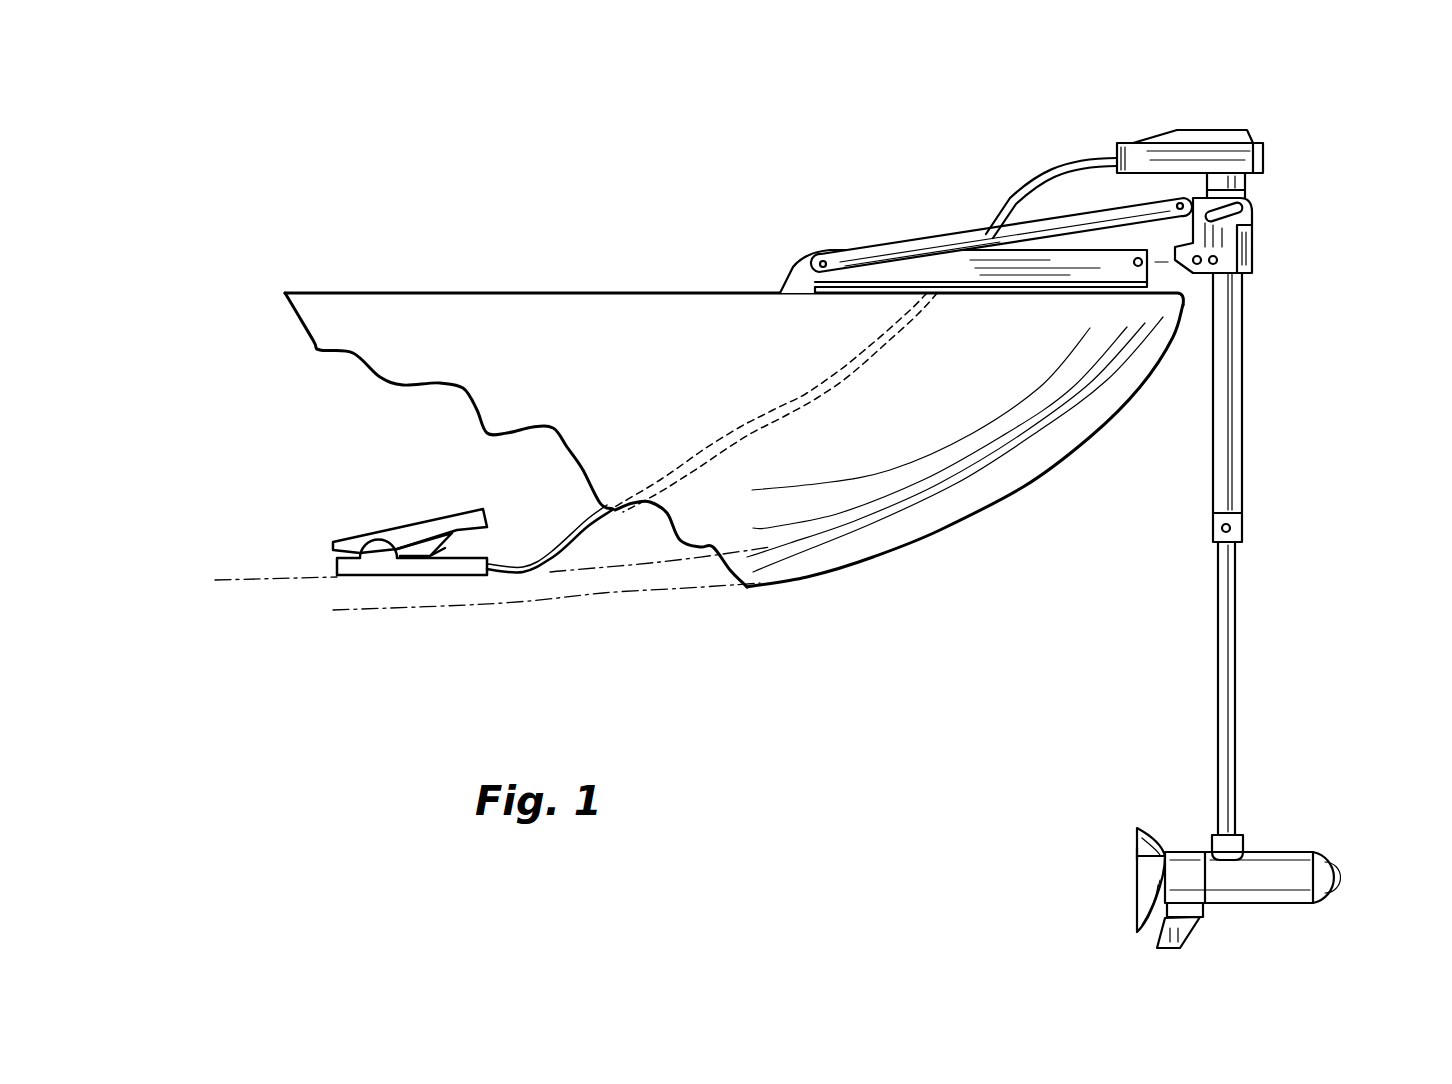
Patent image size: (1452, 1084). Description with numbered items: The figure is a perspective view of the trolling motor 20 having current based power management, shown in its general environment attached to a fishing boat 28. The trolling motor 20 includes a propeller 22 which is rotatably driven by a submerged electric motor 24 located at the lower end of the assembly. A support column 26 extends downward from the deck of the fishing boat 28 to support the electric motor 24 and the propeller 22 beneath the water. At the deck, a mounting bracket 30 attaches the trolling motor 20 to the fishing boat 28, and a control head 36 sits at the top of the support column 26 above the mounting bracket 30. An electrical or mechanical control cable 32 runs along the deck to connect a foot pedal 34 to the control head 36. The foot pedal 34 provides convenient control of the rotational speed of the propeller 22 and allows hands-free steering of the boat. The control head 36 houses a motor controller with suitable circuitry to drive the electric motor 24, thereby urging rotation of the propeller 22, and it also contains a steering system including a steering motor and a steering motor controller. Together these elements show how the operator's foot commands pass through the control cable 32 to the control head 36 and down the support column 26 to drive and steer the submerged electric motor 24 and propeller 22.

The trolling motor 20 is at (1313, 167).
The propeller 22 is at (1135, 838).
The electric motor 24 is at (1283, 860).
The support column 26 is at (1227, 743).
The fishing boat 28 is at (245, 575).
The mounting bracket 30 is at (912, 272).
The control cable 32 is at (573, 540).
The foot pedal 34 is at (397, 530).
The control head 36 is at (1133, 147).